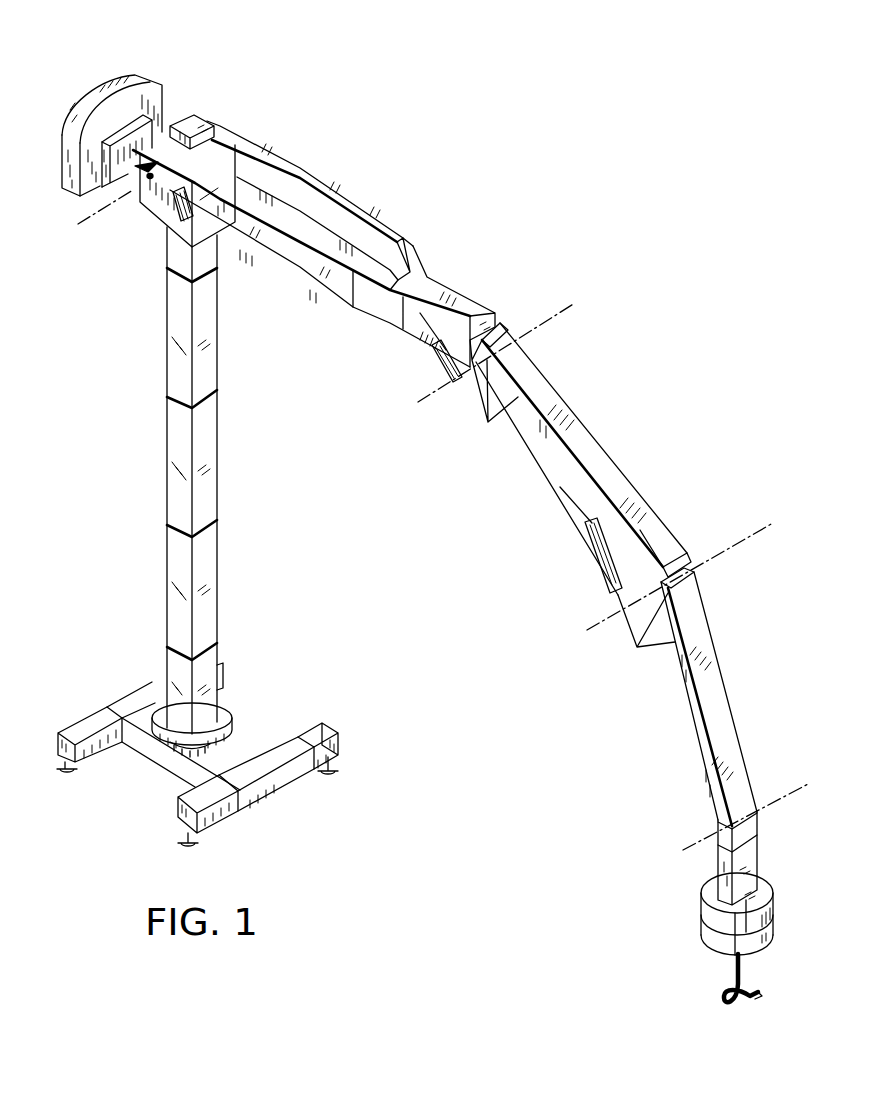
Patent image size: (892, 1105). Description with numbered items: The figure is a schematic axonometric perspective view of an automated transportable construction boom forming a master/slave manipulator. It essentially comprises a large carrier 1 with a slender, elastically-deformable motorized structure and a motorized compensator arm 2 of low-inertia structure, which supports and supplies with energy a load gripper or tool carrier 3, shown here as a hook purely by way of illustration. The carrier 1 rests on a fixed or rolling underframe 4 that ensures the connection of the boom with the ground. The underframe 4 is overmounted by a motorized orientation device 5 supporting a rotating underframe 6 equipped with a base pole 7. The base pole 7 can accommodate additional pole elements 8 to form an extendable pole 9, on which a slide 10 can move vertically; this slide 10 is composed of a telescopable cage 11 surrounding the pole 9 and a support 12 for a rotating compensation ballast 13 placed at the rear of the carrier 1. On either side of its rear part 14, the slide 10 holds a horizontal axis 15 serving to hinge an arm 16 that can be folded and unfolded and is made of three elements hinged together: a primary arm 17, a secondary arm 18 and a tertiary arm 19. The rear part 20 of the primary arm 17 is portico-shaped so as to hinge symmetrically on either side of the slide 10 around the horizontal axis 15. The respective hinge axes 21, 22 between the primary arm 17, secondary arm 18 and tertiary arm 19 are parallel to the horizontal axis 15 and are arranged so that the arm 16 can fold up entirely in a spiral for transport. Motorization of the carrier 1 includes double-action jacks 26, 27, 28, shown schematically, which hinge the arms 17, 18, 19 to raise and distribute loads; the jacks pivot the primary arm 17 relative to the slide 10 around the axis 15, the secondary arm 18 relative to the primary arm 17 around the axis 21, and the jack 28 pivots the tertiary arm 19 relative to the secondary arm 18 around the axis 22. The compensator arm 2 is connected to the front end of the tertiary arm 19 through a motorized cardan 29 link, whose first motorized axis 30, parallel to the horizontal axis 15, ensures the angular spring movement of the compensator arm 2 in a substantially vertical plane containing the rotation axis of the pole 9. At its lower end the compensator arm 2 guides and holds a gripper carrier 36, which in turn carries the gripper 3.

The carrier 1 is at (462, 200).
The compensator arm 2 is at (720, 873).
The load gripper or tool carrier 3 is at (712, 940).
The underframe 4 is at (252, 797).
The motorized orientation device 5 is at (182, 752).
The rotating underframe 6 is at (236, 718).
The base pole 7 is at (224, 672).
The additional pole elements 8 is at (210, 479).
The extendable pole 9 is at (231, 480).
The slide 10 is at (152, 218).
The telescopable cage 11 is at (232, 134).
The support 12 is at (80, 192).
The rotating compensation ballast 13 is at (140, 75).
The rear part 14 is at (178, 124).
The horizontal axis 15 is at (85, 236).
The arm 16 is at (520, 458).
The primary arm 17 is at (453, 297).
The secondary arm 18 is at (665, 535).
The tertiary arm 19 is at (742, 778).
The rear part of primary arm 20 is at (318, 227).
The hinge axis 21 is at (435, 402).
The hinge axis 22 is at (606, 634).
The double-action jack 26 is at (177, 242).
The double-action jack 27 is at (438, 362).
The double-action jack 28 is at (596, 568).
The motorized cardan link 29 is at (758, 818).
The first motorized axis 30 is at (672, 852).
The gripper carrier 36 is at (776, 918).